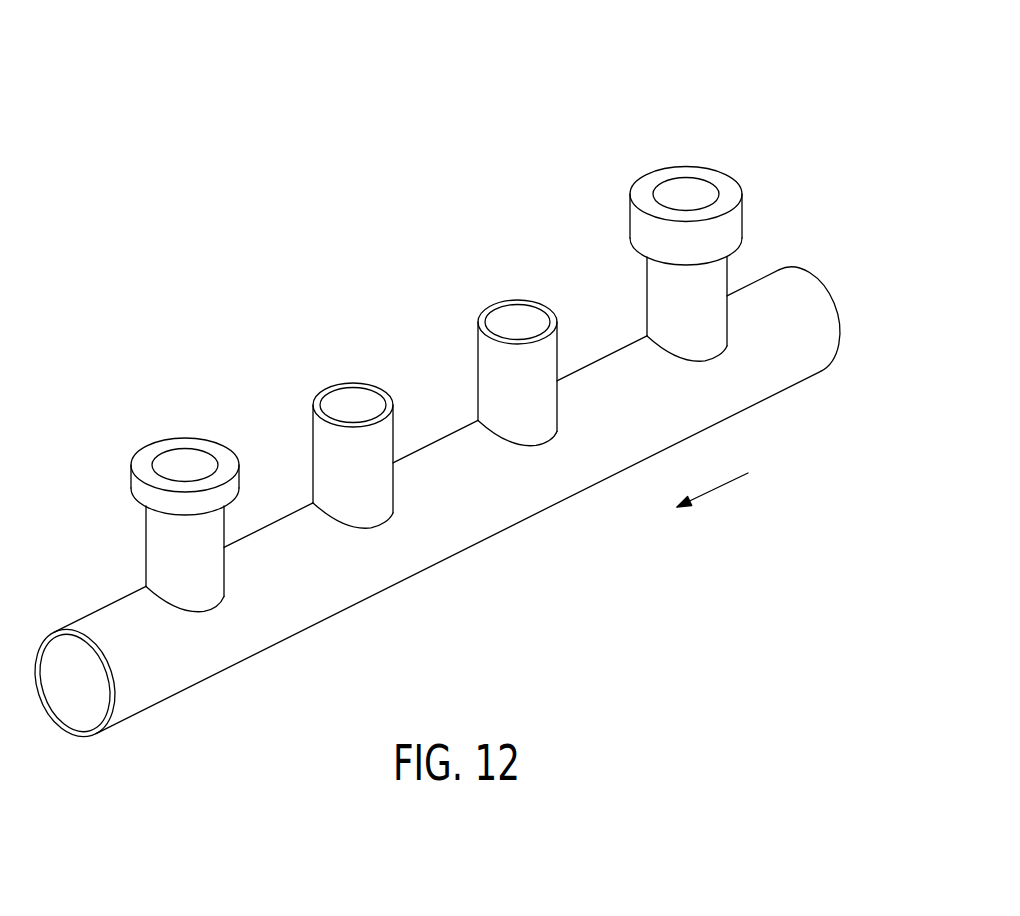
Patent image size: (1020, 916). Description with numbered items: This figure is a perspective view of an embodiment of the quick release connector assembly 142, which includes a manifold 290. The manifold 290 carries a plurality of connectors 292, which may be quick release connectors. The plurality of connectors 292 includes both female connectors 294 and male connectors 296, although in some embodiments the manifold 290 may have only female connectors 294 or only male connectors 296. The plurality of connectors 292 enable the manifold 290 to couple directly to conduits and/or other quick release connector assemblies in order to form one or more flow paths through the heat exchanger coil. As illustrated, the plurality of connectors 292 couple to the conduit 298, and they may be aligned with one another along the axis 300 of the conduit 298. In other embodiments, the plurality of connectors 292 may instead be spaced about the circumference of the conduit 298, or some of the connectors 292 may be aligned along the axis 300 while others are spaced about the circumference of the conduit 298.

The quick release connector assembly 142 is at (748, 100).
The manifold 290 is at (688, 572).
The plurality of connectors 292 is at (305, 232).
The female connectors 294 is at (148, 455).
The male connectors 296 is at (325, 388).
The conduit 298 is at (162, 672).
The axis 300 is at (718, 488).